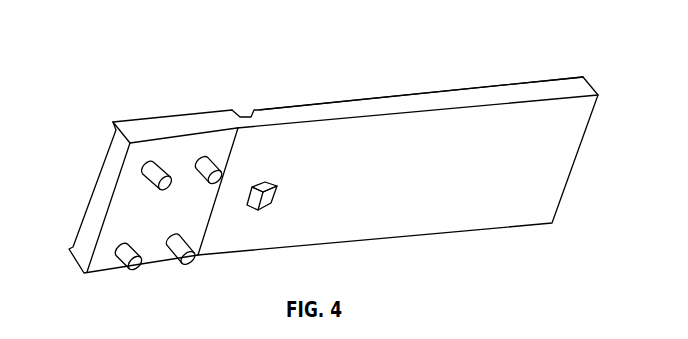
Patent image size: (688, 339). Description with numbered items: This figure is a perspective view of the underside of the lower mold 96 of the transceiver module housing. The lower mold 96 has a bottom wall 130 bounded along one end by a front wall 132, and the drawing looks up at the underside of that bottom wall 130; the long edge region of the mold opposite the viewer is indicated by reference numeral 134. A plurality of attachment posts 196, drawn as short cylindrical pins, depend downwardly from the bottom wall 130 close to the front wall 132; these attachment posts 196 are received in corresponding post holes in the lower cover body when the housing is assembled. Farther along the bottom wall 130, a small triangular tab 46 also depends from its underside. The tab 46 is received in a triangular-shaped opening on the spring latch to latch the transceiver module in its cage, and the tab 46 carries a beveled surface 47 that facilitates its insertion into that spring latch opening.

The lower mold 96 is at (112, 61).
The bottom wall 130 is at (481, 163).
The front wall 132 is at (100, 198).
The top edge of printed circuit board 134 is at (394, 98).
The attachment posts 196 is at (150, 162).
The triangular tab 46 is at (280, 212).
The beveled surface 47 is at (275, 198).